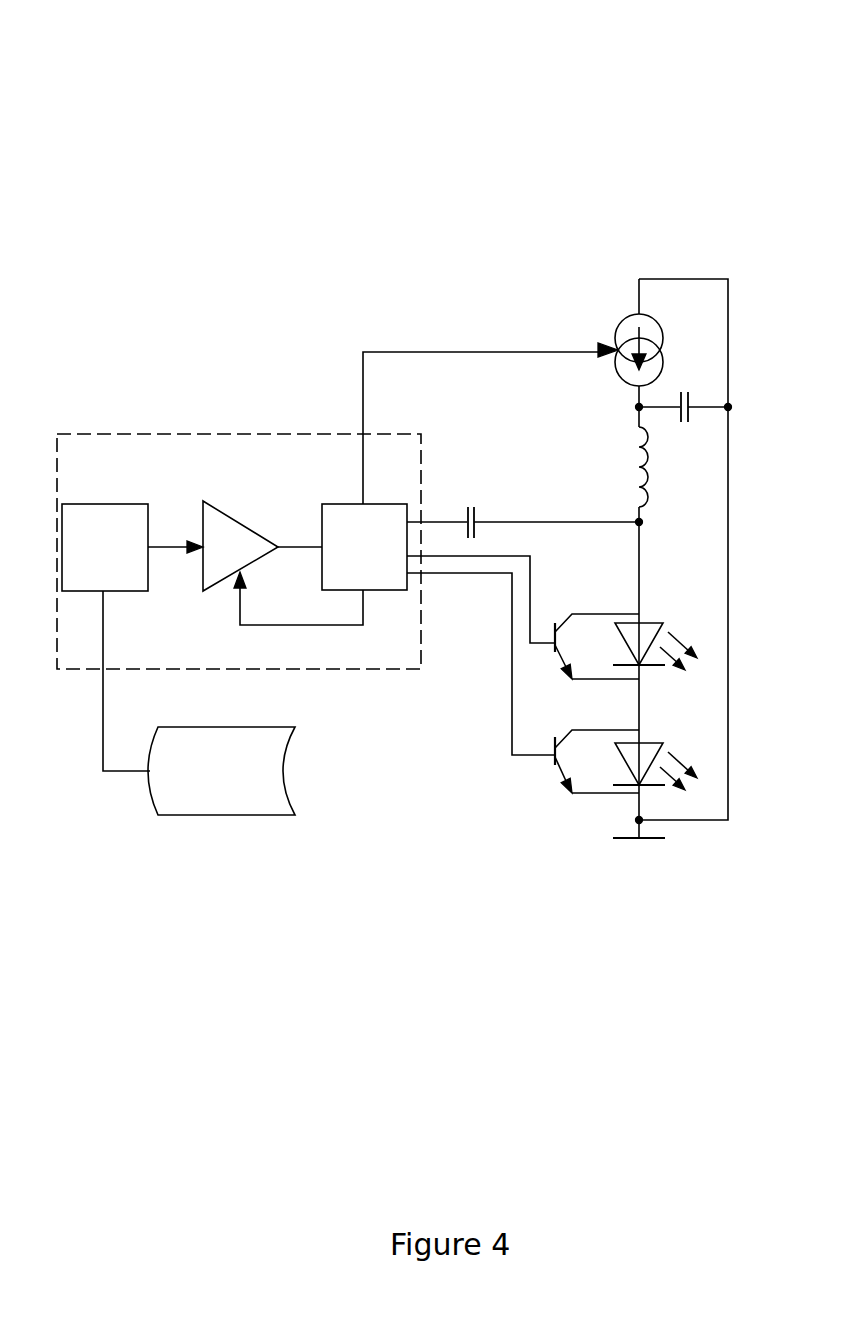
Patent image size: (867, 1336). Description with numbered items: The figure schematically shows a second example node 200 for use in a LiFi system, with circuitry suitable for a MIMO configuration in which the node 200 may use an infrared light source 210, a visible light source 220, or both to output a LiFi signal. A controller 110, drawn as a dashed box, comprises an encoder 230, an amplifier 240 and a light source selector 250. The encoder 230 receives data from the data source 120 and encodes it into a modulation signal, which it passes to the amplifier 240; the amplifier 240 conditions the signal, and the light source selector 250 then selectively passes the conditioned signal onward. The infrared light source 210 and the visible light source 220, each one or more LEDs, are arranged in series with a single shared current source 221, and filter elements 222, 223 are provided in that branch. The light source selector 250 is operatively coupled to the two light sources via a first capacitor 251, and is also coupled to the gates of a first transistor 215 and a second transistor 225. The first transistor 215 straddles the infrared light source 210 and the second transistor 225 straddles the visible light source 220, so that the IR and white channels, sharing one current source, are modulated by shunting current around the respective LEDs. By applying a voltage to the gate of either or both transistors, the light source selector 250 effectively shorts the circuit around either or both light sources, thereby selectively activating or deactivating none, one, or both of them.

The node 200 is at (418, 113).
The controller 110 is at (287, 433).
The encoder 230 is at (133, 504).
The amplifier 240 is at (203, 565).
The light source selector 250 is at (330, 504).
The first capacitor 251 is at (472, 507).
The current source 221 is at (620, 333).
The filter element 222 is at (688, 393).
The filter element 223 is at (639, 445).
The infrared light source 210 is at (652, 622).
The visible light source 220 is at (652, 742).
The first transistor 215 is at (550, 655).
The second transistor 225 is at (550, 768).
The data source 120 is at (228, 815).